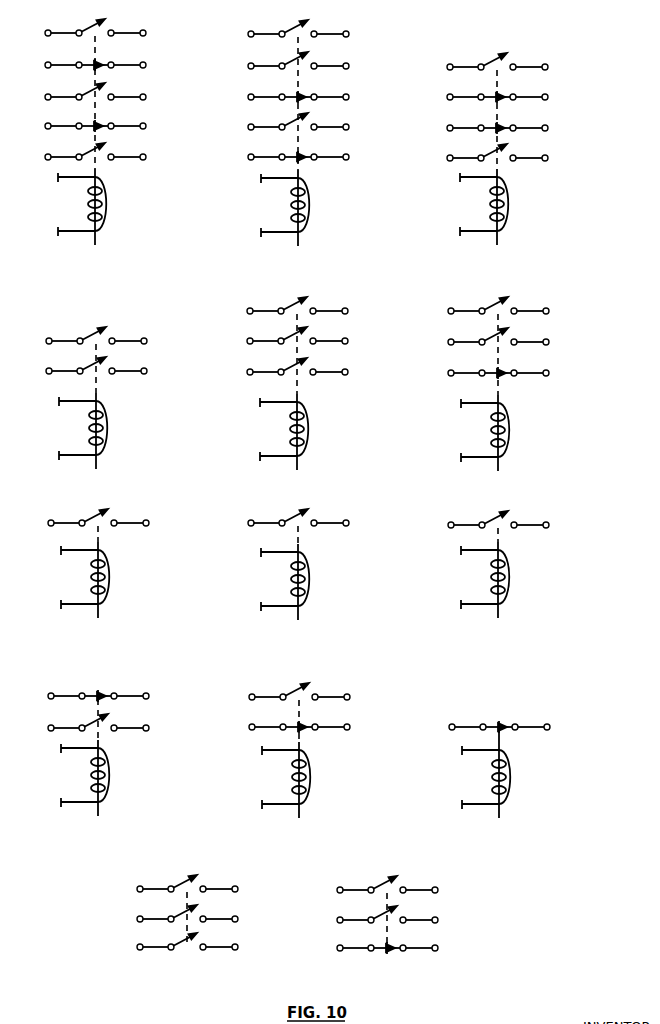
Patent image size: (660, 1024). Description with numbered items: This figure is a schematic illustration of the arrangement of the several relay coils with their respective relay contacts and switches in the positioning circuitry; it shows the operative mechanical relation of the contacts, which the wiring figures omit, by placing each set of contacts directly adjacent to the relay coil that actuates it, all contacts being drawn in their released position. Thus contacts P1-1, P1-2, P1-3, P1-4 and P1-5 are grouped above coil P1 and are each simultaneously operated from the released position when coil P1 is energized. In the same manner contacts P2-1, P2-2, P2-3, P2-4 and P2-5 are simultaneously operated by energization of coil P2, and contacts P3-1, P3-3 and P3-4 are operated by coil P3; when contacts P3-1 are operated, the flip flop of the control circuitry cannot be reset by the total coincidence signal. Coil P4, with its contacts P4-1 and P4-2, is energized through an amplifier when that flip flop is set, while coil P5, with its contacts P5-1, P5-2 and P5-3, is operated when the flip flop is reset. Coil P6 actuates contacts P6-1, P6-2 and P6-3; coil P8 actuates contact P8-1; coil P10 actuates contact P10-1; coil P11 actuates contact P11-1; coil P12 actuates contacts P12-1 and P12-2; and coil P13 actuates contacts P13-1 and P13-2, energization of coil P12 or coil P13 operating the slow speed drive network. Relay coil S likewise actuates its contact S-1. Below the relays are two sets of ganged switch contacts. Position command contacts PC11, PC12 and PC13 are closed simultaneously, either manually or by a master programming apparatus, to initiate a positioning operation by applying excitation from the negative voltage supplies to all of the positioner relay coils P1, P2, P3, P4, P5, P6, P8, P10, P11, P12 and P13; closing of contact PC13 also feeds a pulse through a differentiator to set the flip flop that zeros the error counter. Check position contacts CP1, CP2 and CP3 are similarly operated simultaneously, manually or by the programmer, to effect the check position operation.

The relay contact P1-1 is at (110, 24).
The relay contact P1-2 is at (110, 58).
The relay contact P1-3 is at (110, 88).
The relay contact P1-4 is at (110, 119).
The relay contact P1-5 is at (110, 148).
The relay coil P1 is at (97, 207).
The relay contact P2-1 is at (318, 25).
The relay contact P2-2 is at (318, 57).
The relay contact P2-3 is at (318, 90).
The relay contact P2-4 is at (318, 118).
The relay contact P2-5 is at (318, 150).
The relay coil P2 is at (301, 208).
The relay contact P3-1 is at (516, 58).
The relay contact P3-3 is at (516, 105).
The relay contact P3-4 is at (516, 149).
The relay coil P3 is at (500, 207).
The relay contact P4-1 is at (116, 332).
The relay contact P4-2 is at (116, 362).
The relay coil P4 is at (98, 431).
The relay contact P5-1 is at (316, 302).
The relay contact P5-2 is at (316, 332).
The relay contact P5-3 is at (316, 363).
The relay coil P5 is at (300, 432).
The relay contact P6-1 is at (519, 302).
The relay contact P6-2 is at (519, 333).
The relay contact P6-3 is at (519, 366).
The relay coil P6 is at (499, 433).
The relay contact P8-1 is at (115, 514).
The relay coil P8 is at (101, 580).
The relay contact P10-1 is at (322, 514).
The relay coil P10 is at (305, 582).
The relay contact P11-1 is at (522, 516).
The relay coil P11 is at (508, 580).
The relay contact P12-1 is at (124, 689).
The relay contact P12-2 is at (124, 719).
The relay coil P12 is at (107, 778).
The relay contact P13-1 is at (328, 688).
The relay contact P13-2 is at (328, 720).
The relay coil P13 is at (309, 780).
The relay contact S-1 is at (517, 727).
The relay coil S is at (497, 780).
The position command contact PC11 is at (210, 886).
The position command contact PC12 is at (210, 916).
The position command contact PC13 is at (210, 944).
The check position contact CP1 is at (407, 887).
The check position contact CP2 is at (407, 917).
The check position contact CP3 is at (407, 948).